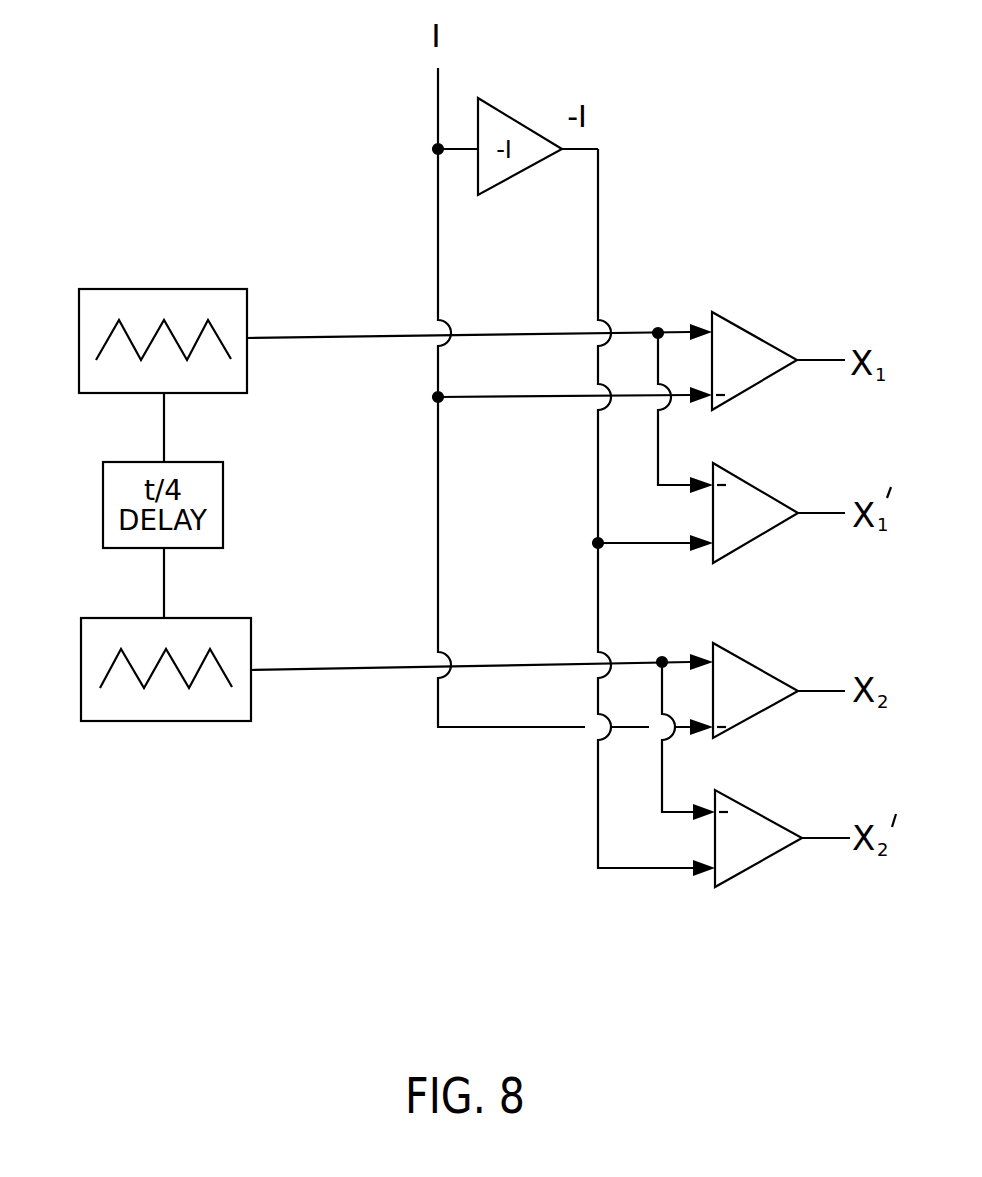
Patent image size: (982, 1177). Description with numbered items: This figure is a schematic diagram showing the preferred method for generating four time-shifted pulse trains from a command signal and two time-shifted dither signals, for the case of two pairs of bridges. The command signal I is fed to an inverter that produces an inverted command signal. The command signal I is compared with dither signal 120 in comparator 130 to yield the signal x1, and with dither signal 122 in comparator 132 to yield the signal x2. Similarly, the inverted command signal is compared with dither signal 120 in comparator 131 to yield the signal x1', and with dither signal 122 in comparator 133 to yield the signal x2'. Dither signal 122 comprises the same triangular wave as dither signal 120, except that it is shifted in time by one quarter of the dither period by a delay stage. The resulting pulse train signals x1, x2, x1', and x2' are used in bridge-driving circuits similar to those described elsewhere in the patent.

The dither signal 120 is at (87, 328).
The dither signal 122 is at (96, 660).
The comparator 130 is at (755, 353).
The comparator 131 is at (746, 502).
The comparator 132 is at (752, 682).
The comparator 133 is at (760, 826).